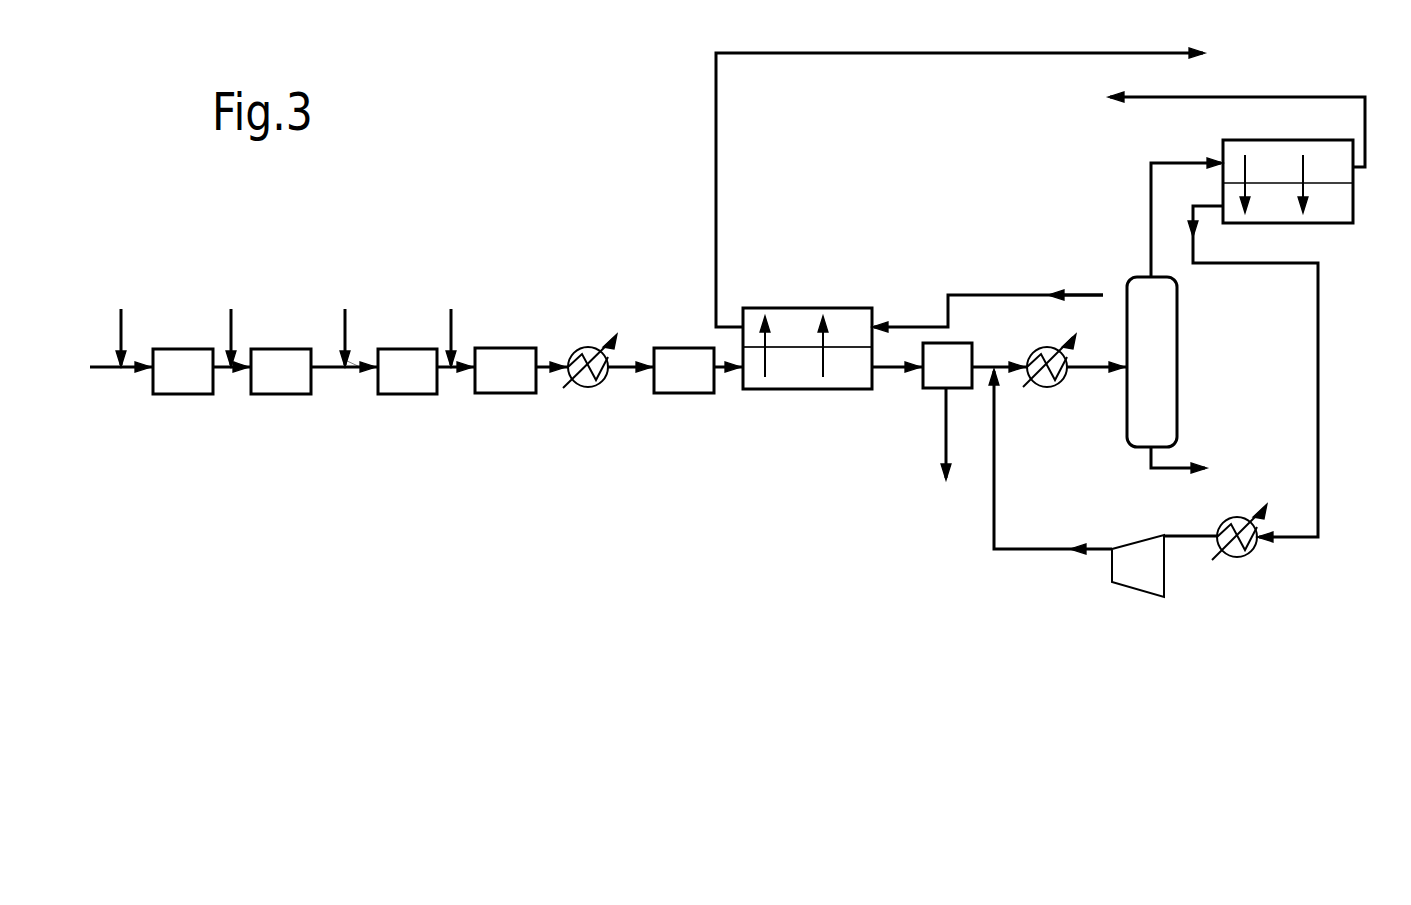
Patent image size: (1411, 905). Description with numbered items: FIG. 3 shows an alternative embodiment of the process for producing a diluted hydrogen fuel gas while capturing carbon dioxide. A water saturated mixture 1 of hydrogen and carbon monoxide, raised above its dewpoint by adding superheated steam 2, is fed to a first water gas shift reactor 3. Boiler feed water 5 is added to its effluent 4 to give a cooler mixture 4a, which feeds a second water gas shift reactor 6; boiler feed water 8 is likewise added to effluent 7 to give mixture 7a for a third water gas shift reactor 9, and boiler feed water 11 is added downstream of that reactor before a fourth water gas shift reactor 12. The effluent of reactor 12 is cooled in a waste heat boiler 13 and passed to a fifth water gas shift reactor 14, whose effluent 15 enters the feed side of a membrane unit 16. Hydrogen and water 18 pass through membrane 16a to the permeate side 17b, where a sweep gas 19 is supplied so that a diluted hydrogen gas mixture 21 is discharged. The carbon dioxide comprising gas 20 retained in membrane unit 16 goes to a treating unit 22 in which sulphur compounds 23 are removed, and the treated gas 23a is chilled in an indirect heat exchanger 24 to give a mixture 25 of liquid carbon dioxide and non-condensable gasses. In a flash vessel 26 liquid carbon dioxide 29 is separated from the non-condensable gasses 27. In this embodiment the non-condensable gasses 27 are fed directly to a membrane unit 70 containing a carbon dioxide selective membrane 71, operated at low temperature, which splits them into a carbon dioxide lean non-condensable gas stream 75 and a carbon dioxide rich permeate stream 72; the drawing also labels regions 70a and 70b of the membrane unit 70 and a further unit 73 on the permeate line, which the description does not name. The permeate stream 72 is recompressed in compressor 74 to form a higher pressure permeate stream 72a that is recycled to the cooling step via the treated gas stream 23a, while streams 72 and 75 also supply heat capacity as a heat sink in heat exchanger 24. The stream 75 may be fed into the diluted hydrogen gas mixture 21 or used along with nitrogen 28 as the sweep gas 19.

The water saturated mixture 1 is at (105, 370).
The superheated steam 2 is at (124, 328).
The first water gas shift reactor 3 is at (175, 382).
The effluent 4 is at (222, 372).
The mixture 4a is at (243, 355).
The boiler feed water 5 is at (229, 320).
The second water gas shift reactor 6 is at (273, 382).
The effluent 7 is at (328, 372).
The mixture 7a is at (358, 358).
The boiler feed water 8 is at (342, 325).
The third water gas shift reactor 9 is at (399, 382).
The boiler feed water 11 is at (449, 322).
The fourth water gas shift reactor 12 is at (490, 382).
The waste heat boiler 13 is at (590, 345).
The fifth water gas shift reactor 14 is at (669, 382).
The effluent 15 is at (729, 368).
The membrane unit 16 is at (858, 390).
The membrane 16a is at (810, 348).
The permeate side 17b is at (839, 319).
The hydrogen and water 18 is at (780, 338).
The sweep gas 19 is at (915, 322).
The carbon dioxide comprising gas 20 is at (893, 368).
The diluted hydrogen gas mixture 21 is at (713, 247).
The treating unit 22 is at (932, 376).
The sulphur compounds 23 is at (950, 407).
The treated gas 23a is at (982, 360).
The indirect heat exchanger 24 is at (1057, 387).
The mixture of liquid carbon dioxide and non-condensable gasses 25 is at (1088, 372).
The flash vessel 26 is at (1137, 374).
The non-condensable gasses 27 is at (1148, 215).
The nitrogen 28 is at (1100, 293).
The liquid carbon dioxide 29 is at (1167, 470).
The membrane unit 70 is at (1355, 175).
The condenser bottom outlet 70a is at (1322, 217).
The condenser upper section 70b is at (1282, 162).
The carbon dioxide selective membrane 71 is at (1262, 183).
The carbon dioxide rich permeate stream 72 is at (1317, 422).
The higher pressure carbon dioxide rich permeate stream 72a is at (993, 523).
The heat exchanger 73 is at (1248, 560).
The compressor 74 is at (1123, 582).
The carbon dioxide lean non-condensable gas stream 75 is at (1302, 93).